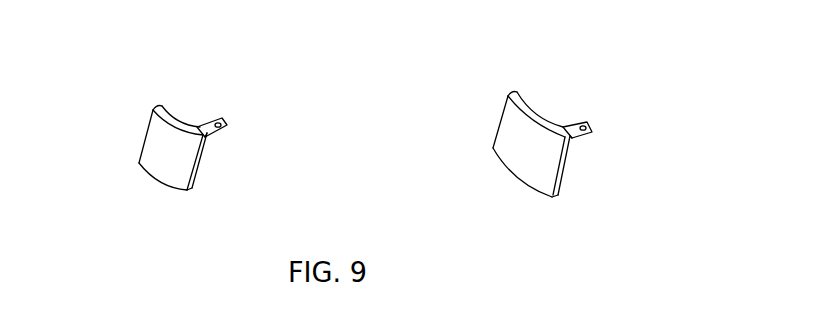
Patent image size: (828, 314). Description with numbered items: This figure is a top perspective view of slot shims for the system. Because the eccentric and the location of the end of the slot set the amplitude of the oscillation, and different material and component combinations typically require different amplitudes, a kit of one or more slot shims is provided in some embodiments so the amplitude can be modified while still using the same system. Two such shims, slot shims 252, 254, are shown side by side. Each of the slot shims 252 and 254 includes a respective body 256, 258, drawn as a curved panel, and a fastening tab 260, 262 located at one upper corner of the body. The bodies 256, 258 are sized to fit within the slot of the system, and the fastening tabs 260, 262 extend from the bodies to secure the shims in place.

The slot shim 252 is at (112, 124).
The slot shim 254 is at (465, 106).
The body 256 is at (198, 168).
The body 258 is at (563, 172).
The fastening tab 260 is at (226, 122).
The fastening tab 262 is at (593, 123).